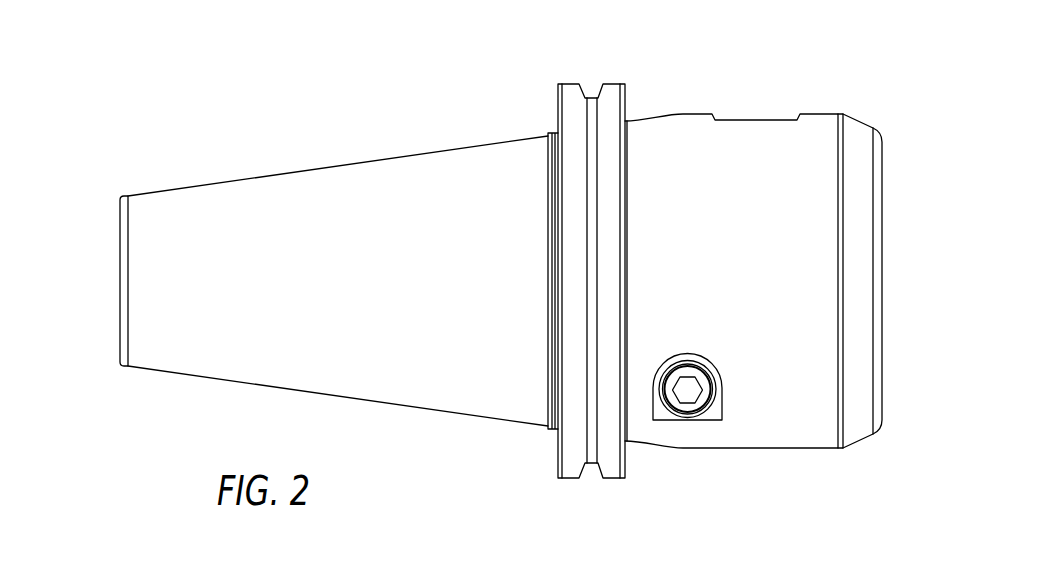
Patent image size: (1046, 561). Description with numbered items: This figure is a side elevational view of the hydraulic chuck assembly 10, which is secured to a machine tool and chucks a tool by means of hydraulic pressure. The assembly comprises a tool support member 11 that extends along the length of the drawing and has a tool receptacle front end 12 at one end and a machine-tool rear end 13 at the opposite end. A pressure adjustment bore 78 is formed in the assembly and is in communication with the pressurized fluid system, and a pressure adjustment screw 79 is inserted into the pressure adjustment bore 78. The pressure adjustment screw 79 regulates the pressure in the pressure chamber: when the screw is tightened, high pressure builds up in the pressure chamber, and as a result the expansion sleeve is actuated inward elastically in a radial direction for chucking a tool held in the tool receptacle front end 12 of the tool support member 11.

The hydraulic chuck assembly 10 is at (212, 84).
The tool support member 11 is at (397, 186).
The tool receptacle front end 12 is at (884, 258).
The machine-tool rear end 13 is at (113, 259).
The pressure adjustment bore 78 is at (688, 364).
The pressure adjustment screw 79 is at (688, 393).